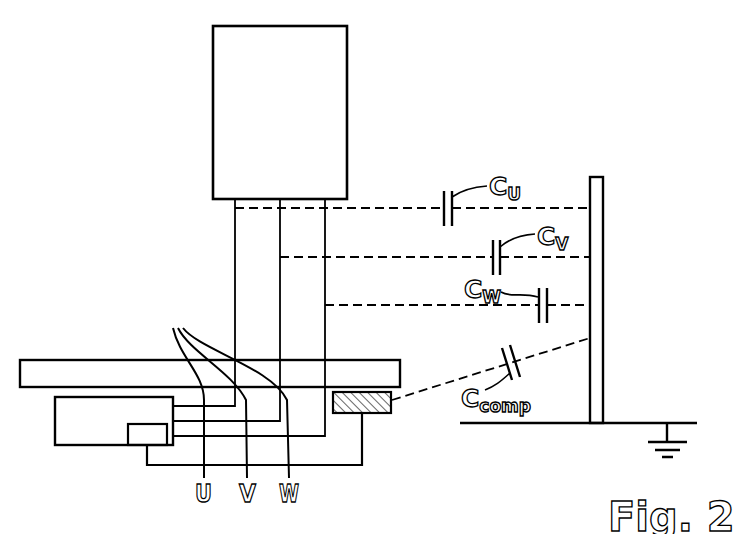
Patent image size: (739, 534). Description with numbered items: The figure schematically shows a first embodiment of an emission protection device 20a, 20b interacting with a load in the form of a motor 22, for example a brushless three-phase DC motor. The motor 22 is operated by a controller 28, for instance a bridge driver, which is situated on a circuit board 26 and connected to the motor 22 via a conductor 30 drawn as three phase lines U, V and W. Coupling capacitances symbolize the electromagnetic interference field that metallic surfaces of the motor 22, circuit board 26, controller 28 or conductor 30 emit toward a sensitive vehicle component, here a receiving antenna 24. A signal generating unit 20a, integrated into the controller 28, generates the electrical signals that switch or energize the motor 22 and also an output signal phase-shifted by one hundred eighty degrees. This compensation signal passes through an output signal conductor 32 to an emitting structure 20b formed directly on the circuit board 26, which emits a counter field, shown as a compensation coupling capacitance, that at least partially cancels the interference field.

The motor 22 is at (213, 112).
The receiving antenna 24 is at (604, 300).
The circuit board 26 is at (43, 360).
The controller 28 is at (75, 446).
The signal generating unit 20a is at (144, 424).
The emitting structure 20b is at (385, 414).
The conductor 30 is at (225, 389).
The output signal conductor 32 is at (340, 466).